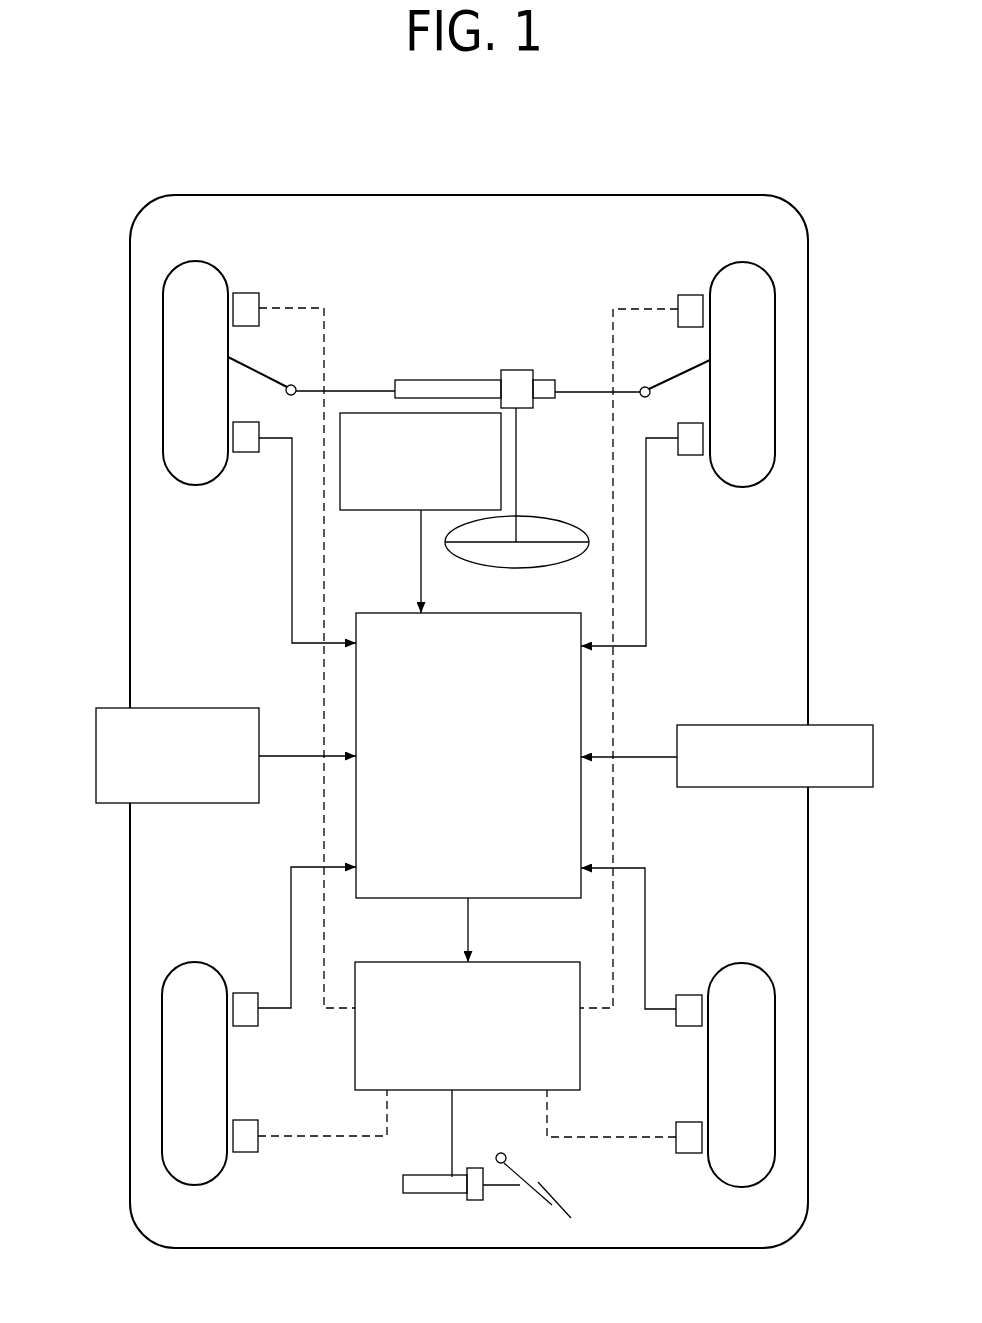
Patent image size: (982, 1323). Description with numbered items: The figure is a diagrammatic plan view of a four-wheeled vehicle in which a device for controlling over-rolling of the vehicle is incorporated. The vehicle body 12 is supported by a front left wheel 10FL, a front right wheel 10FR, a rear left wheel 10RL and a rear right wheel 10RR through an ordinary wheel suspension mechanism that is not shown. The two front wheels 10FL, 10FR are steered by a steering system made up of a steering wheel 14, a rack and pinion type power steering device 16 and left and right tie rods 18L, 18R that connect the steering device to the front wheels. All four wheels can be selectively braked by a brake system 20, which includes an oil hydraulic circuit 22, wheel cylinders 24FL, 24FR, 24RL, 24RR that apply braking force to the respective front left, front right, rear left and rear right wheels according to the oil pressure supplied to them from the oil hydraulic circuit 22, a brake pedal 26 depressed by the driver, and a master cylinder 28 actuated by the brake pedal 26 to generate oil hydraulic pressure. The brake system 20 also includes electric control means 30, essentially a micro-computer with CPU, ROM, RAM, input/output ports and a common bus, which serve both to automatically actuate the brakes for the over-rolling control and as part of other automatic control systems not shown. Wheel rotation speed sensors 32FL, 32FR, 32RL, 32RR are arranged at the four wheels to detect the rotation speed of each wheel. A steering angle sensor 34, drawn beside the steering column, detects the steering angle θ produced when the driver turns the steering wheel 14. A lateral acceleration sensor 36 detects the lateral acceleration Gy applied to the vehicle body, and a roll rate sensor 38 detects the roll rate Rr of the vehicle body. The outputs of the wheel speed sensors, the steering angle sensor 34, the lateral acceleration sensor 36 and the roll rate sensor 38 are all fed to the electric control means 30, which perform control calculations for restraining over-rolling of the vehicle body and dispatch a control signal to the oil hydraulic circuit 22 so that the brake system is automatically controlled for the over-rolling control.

The front left wheel 10FL is at (163, 389).
The front right wheel 10FR is at (775, 389).
The rear left wheel 10RL is at (162, 1081).
The rear right wheel 10RR is at (775, 1085).
The vehicle body 12 is at (808, 550).
The steering wheel 14 is at (532, 513).
The rack and pinion type power steering device 16 is at (508, 356).
The tie rod 18L is at (250, 367).
The tie rod 18R is at (690, 368).
The brake system 20 is at (374, 1173).
The oil hydraulic circuit 22 is at (467, 994).
The wheel cylinder 24FL is at (245, 303).
The wheel cylinder 24FR is at (690, 300).
The wheel cylinder 24RL is at (245, 1130).
The wheel cylinder 24RR is at (690, 1128).
The brake pedal 26 is at (572, 1210).
The master cylinder 28 is at (421, 1195).
The electric control means 30 is at (468, 755).
The wheel rotation speed sensor 32FL is at (246, 452).
The wheel rotation speed sensor 32FR is at (690, 455).
The wheel rotation speed sensor 32RL is at (250, 1000).
The wheel rotation speed sensor 32RR is at (688, 995).
The steering angle sensor 34 is at (378, 510).
The lateral acceleration sensor 36 is at (195, 708).
The roll rate sensor 38 is at (740, 725).